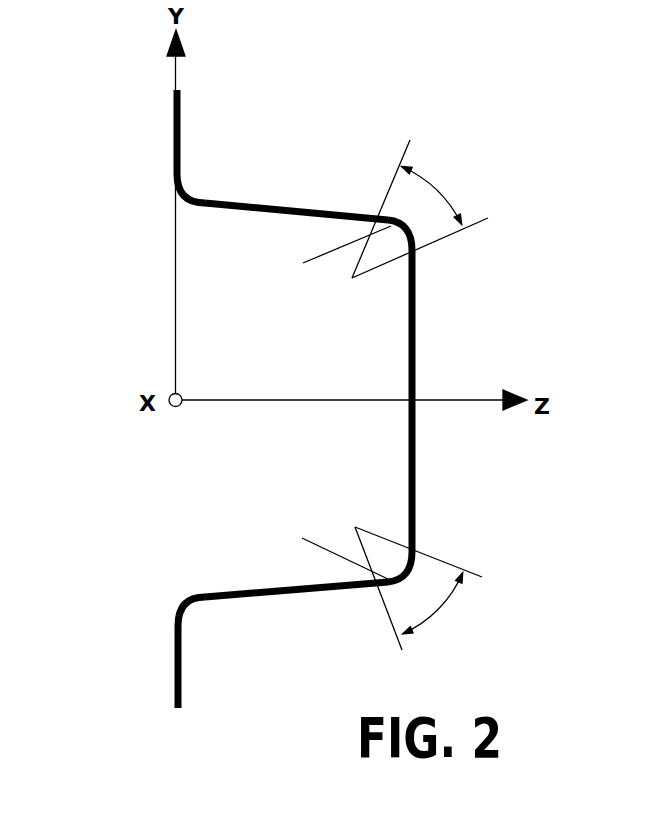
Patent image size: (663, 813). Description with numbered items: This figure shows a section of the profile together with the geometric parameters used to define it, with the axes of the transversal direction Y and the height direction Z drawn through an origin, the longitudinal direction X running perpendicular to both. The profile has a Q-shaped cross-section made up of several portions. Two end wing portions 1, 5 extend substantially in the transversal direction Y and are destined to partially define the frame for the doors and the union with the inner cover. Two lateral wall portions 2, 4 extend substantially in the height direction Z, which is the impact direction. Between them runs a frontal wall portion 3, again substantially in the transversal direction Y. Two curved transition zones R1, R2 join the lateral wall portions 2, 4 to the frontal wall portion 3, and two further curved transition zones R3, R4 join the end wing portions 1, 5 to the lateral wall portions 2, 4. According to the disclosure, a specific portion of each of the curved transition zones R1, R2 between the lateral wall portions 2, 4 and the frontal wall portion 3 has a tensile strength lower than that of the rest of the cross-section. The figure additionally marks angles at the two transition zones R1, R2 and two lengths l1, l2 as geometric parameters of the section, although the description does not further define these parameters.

The end wing portion 1 is at (176, 130).
The lateral wall portion 2 is at (298, 210).
The frontal wall portion 3 is at (413, 358).
The lateral wall portion 4 is at (283, 595).
The end wing portion 5 is at (177, 667).
The curved transition zone R1 is at (352, 278).
The curved transition zone R2 is at (355, 527).
The curved transition zone R3 is at (192, 188).
The curved transition zone R4 is at (192, 615).
The first length l1 is at (331, 255).
The second length l2 is at (330, 546).